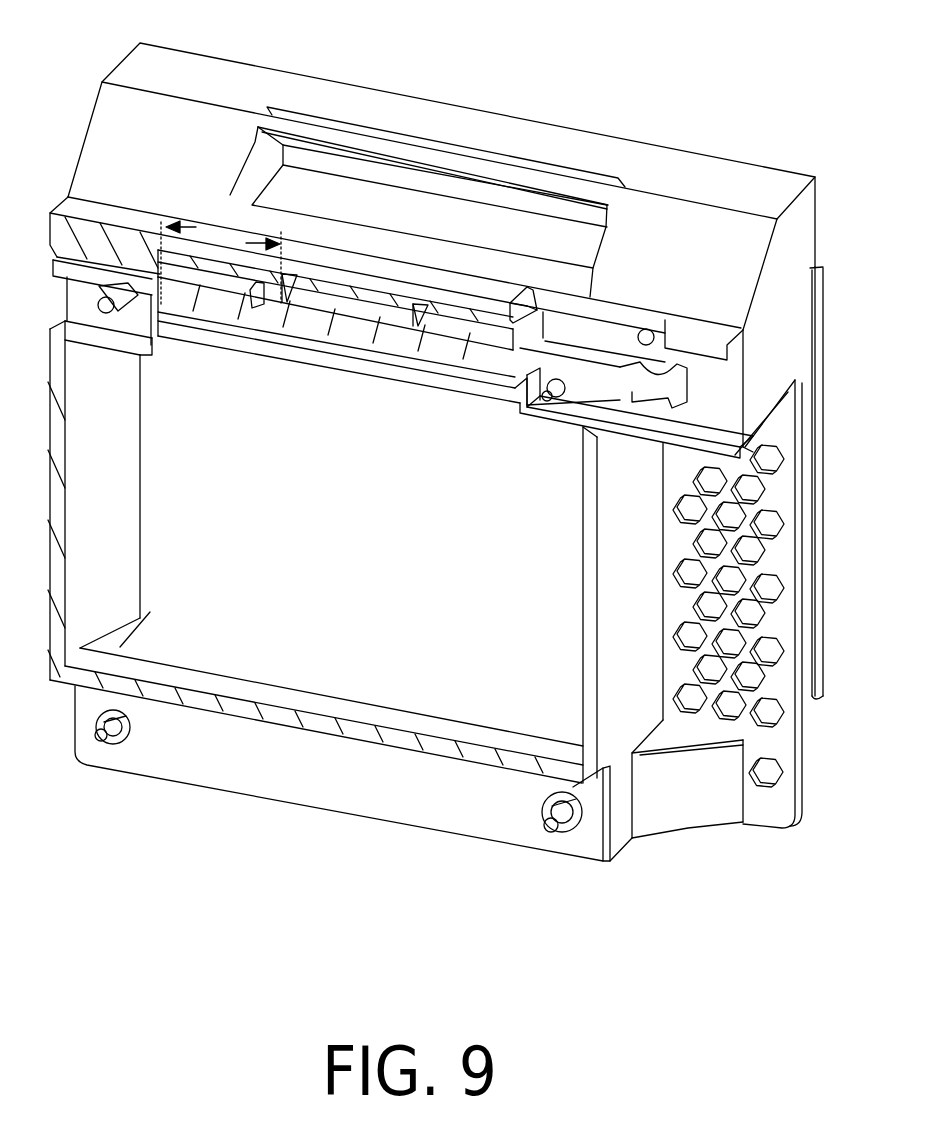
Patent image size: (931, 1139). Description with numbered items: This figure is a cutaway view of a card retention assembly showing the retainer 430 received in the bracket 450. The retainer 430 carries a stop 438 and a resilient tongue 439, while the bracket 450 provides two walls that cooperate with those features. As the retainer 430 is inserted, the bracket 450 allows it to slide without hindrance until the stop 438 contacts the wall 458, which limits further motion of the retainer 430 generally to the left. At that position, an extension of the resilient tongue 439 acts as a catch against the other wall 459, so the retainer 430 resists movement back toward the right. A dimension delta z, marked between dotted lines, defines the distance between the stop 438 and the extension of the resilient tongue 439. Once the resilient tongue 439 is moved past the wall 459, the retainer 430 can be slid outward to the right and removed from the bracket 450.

The bracket 450 is at (437, 112).
The wall 459 is at (287, 285).
The resilient tongue 439 is at (280, 303).
The stop 438 is at (335, 322).
The wall 458 is at (153, 339).
The retainer 430 is at (480, 350).